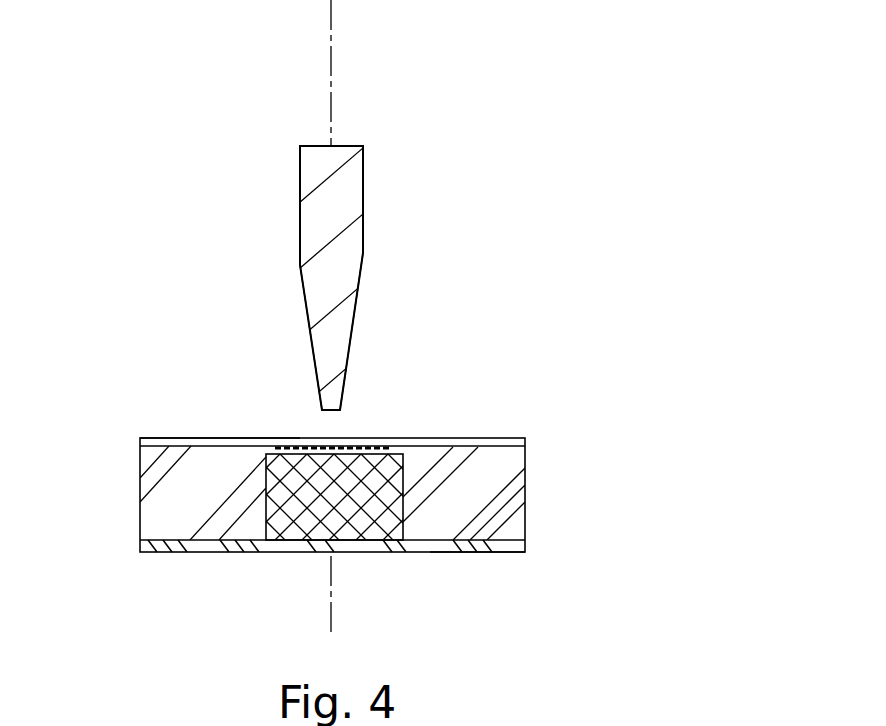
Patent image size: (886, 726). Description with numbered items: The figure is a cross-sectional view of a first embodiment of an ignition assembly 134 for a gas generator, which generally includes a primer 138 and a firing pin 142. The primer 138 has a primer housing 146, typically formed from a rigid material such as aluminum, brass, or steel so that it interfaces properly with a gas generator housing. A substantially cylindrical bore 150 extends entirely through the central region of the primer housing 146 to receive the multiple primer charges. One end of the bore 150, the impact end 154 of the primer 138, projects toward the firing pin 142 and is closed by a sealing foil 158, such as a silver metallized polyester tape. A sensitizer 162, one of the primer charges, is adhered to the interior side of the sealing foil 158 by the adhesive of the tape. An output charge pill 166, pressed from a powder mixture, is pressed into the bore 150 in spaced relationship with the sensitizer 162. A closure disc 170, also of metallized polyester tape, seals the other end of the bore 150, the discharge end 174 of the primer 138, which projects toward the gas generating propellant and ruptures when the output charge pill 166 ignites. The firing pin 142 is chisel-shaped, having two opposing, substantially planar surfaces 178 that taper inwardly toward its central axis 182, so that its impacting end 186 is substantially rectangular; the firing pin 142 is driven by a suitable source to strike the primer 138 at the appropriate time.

The ignition assembly 134 is at (575, 313).
The primer 138 is at (525, 468).
The firing pin 142 is at (363, 228).
The primer housing 146 is at (140, 518).
The bore 150 is at (292, 440).
The impact end 154 is at (435, 438).
The sealing foil 158 is at (228, 438).
The sensitizer 162 is at (402, 447).
The output charge pill 166 is at (366, 507).
The closure disc 170 is at (260, 552).
The discharge end 174 is at (467, 553).
The planar surfaces 178 is at (302, 307).
The central axis 182 is at (332, 45).
The impacting end 186 is at (333, 411).